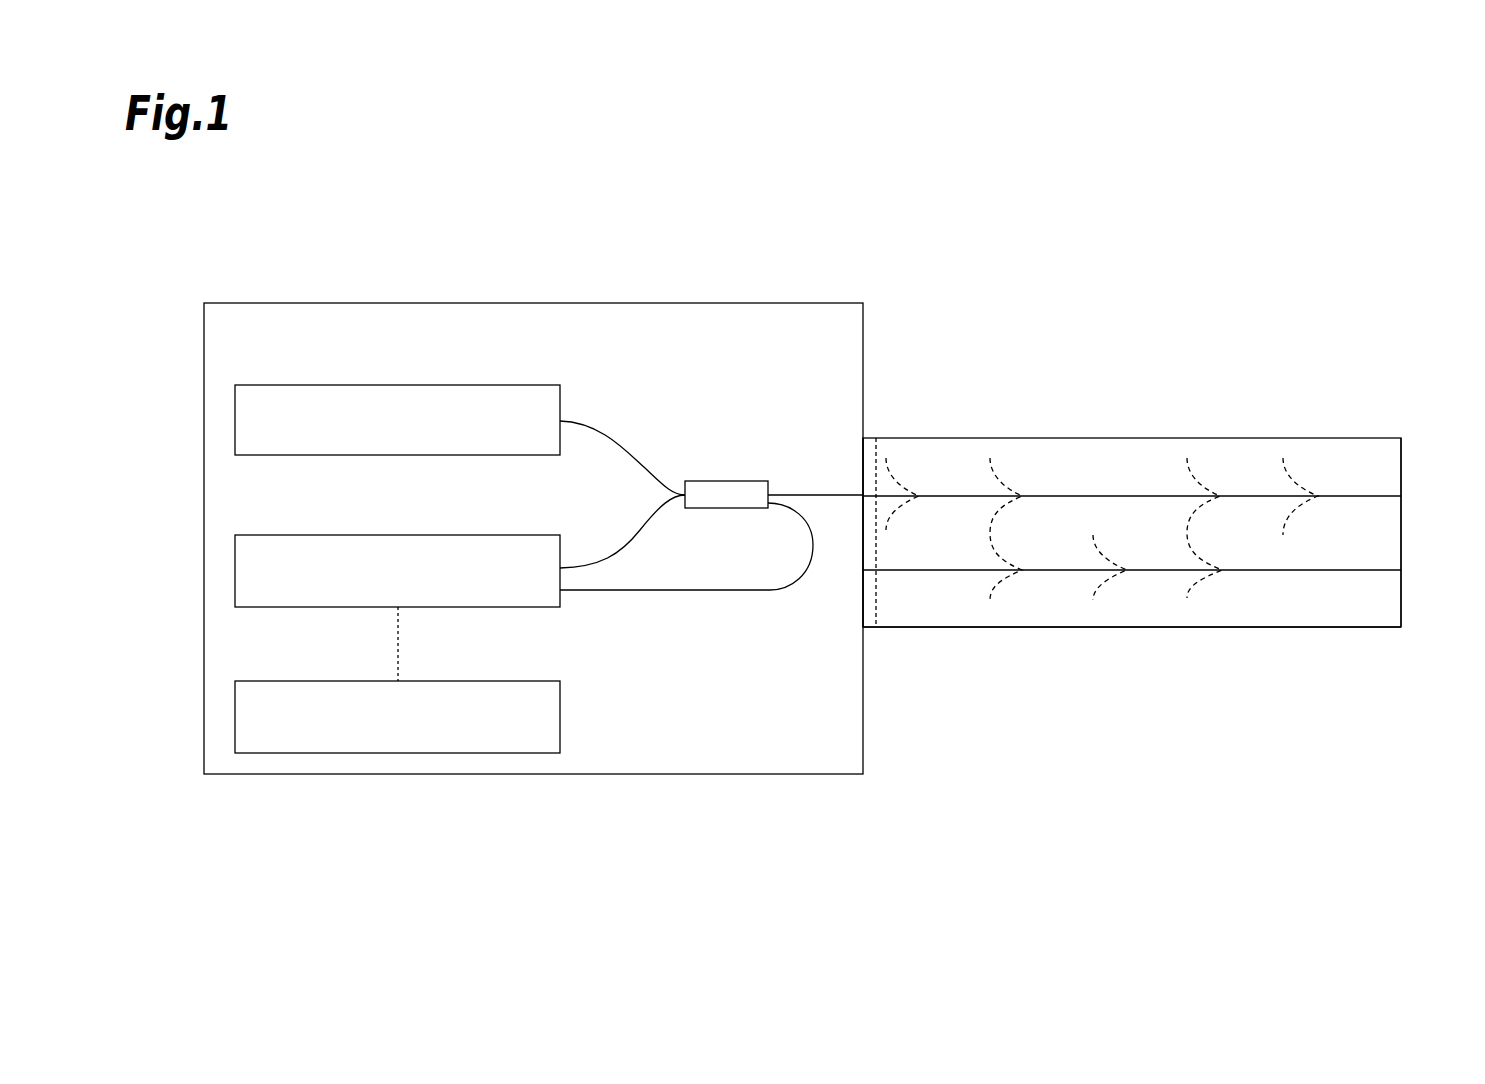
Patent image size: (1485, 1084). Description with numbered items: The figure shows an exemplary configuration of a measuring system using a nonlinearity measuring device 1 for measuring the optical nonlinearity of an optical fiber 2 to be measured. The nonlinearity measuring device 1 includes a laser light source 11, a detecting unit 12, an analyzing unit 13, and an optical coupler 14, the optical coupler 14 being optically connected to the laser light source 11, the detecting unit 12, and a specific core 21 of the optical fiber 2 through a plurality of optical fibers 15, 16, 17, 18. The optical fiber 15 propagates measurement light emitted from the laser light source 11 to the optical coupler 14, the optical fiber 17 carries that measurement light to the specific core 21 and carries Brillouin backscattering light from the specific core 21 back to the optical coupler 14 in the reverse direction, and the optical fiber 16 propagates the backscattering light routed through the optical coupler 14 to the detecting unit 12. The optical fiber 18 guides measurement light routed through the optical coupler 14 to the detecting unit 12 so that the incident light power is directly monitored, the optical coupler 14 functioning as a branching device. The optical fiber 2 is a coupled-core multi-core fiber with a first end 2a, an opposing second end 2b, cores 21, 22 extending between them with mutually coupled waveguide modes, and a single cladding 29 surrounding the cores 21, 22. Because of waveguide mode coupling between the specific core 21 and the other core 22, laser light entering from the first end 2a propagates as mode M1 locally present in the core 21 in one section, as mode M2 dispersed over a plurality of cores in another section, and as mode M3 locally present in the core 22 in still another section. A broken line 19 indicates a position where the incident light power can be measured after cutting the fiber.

The nonlinearity measuring device 1 is at (778, 303).
The laser light source 11 is at (481, 385).
The detecting unit 12 is at (481, 535).
The analyzing unit 13 is at (481, 681).
The optical coupler 14 is at (745, 481).
The optical fiber 15 is at (638, 455).
The optical fiber 16 is at (628, 533).
The optical fiber 17 is at (818, 494).
The optical fiber 18 is at (710, 592).
The broken line 19 is at (878, 632).
The optical fiber to be measured 2 is at (1150, 438).
The first end 2a is at (863, 436).
The second end 2b is at (1401, 438).
The specific core 21 is at (1378, 494).
The other core 22 is at (1378, 570).
The cladding 29 is at (1383, 608).
The mode M1 is at (903, 480).
The mode M2 is at (1000, 470).
The mode M3 is at (1097, 600).